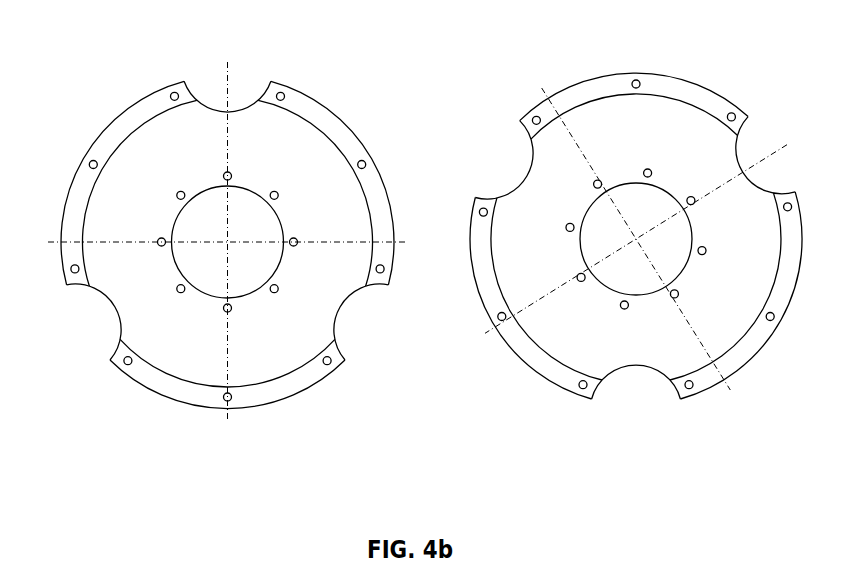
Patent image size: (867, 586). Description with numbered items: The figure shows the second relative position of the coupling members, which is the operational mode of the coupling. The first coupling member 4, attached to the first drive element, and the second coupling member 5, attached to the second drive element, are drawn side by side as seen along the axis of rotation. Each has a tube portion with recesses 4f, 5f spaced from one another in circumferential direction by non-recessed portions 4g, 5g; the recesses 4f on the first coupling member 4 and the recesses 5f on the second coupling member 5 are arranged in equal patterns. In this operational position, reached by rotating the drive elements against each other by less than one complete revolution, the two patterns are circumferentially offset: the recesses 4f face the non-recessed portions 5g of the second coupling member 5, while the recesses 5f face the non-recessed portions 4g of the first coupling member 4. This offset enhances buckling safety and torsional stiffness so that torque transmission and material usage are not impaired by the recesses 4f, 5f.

The first coupling member 4 is at (98, 83).
The recesses 4f is at (240, 112).
The non-recessed portions 4g is at (137, 142).
The second coupling member 5 is at (722, 68).
The recesses 5f is at (525, 160).
The non-recessed portions 5g is at (641, 107).